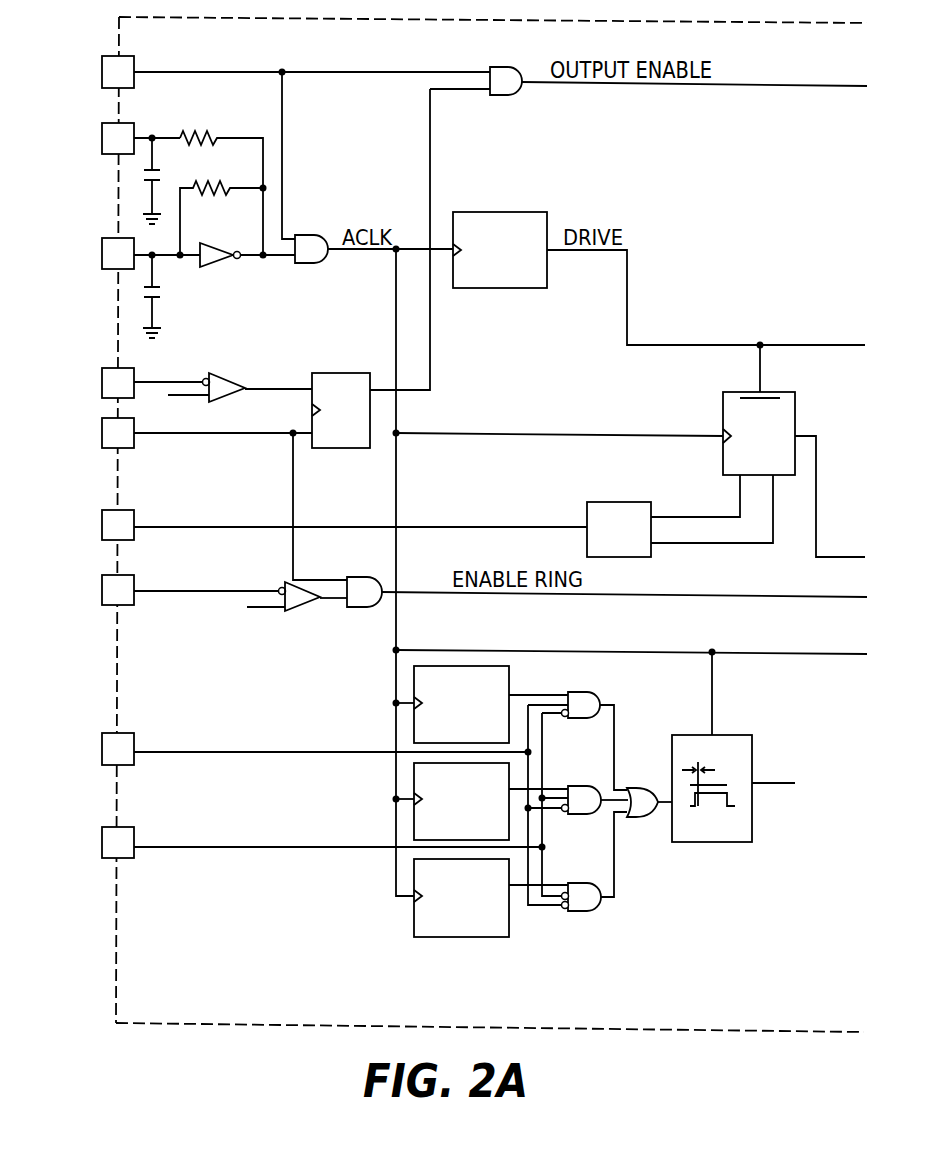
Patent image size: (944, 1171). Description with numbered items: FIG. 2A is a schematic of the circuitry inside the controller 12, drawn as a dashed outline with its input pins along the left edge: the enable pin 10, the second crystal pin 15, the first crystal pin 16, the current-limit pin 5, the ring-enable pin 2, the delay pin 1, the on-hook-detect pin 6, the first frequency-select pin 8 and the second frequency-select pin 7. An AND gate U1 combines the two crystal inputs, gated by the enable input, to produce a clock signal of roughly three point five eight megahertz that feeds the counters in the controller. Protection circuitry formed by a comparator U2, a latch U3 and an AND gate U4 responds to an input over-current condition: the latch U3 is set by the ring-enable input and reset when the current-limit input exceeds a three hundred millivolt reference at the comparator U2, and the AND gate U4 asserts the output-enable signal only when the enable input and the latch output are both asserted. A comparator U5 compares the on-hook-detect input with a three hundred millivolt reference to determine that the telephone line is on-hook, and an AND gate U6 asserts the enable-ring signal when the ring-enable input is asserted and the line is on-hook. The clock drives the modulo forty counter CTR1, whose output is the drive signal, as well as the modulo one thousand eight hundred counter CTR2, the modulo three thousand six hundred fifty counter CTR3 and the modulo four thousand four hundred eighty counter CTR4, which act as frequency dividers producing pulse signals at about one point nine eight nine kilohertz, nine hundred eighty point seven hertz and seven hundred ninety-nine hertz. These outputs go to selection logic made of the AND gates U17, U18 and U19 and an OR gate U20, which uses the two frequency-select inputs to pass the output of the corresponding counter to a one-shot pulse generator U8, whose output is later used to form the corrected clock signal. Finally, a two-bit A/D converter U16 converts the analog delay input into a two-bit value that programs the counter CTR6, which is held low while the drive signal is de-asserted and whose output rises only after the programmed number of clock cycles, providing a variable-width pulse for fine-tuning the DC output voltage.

The controller 12 is at (218, 1024).
The ENABLE pin 10 is at (266, 72).
The XTAL2 pin 15 is at (117, 138).
The XTAL1 pin 16 is at (127, 253).
The DCLIM pin 5 is at (127, 383).
The RINGEN pin 2 is at (174, 433).
The DELAY pin 1 is at (318, 525).
The OHD pin 6 is at (172, 590).
The FS1 pin 8 is at (296, 749).
The FSO pin 7 is at (303, 843).
The AND gate U1 is at (367, 167).
The comparator U2 is at (234, 390).
The latch U3 is at (341, 399).
The AND gate U4 is at (648, 68).
The comparator U5 is at (289, 607).
The AND gate U6 is at (607, 578).
The one-shot pulse generator U8 is at (723, 842).
The 2-bit A/D converter U16 is at (597, 502).
The AND gate U17 is at (595, 741).
The AND gate U18 is at (595, 788).
The AND gate U19 is at (595, 861).
The OR gate U20 is at (645, 790).
The modulo 40 counter CTR1 is at (473, 212).
The modulo 1,800 counter CTR2 is at (414, 729).
The modulo 3,650 counter CTR3 is at (414, 826).
The modulo 4,480 counter CTR4 is at (414, 920).
The counter CTR6 is at (775, 392).